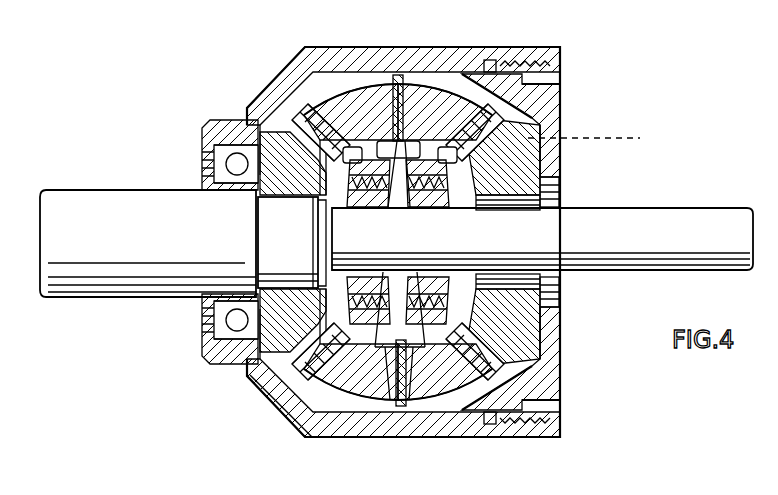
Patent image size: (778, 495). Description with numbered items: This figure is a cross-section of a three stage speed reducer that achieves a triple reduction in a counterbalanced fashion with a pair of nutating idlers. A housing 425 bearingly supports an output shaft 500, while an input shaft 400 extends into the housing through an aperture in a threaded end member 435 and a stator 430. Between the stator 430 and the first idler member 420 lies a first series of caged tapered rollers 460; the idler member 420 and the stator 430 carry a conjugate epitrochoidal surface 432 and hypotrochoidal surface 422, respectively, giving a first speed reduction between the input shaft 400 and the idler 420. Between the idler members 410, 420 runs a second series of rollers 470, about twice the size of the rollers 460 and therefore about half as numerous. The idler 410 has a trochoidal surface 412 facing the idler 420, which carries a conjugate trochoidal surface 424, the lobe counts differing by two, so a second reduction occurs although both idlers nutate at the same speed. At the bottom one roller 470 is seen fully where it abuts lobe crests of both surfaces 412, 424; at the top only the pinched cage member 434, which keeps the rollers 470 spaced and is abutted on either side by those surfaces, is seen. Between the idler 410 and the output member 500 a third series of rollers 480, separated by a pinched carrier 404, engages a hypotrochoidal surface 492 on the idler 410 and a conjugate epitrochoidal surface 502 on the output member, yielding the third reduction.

The input shaft 400 is at (670, 226).
The pinched carrier 404 is at (288, 372).
The nutating idler member 410 is at (354, 209).
The trochoidal surface 412 is at (365, 402).
The first idler member 420 is at (427, 209).
The hypotrochoidal surface 422 is at (478, 75).
The conjugate trochoidal surface 424 is at (453, 393).
The housing 425 is at (450, 46).
The stator 430 is at (544, 170).
The epitrochoidal surface 432 is at (594, 140).
The cage member 434 is at (398, 74).
The threaded end member 435 is at (553, 101).
The first series of caged tapered rollers 460 is at (545, 124).
The second series of rollers 470 is at (417, 347).
The third series of rollers 480 is at (308, 140).
The hypotrochoidal surface 492 is at (300, 405).
The output shaft 500 is at (182, 203).
The conjugate epitrochoidal surface 502 is at (254, 384).